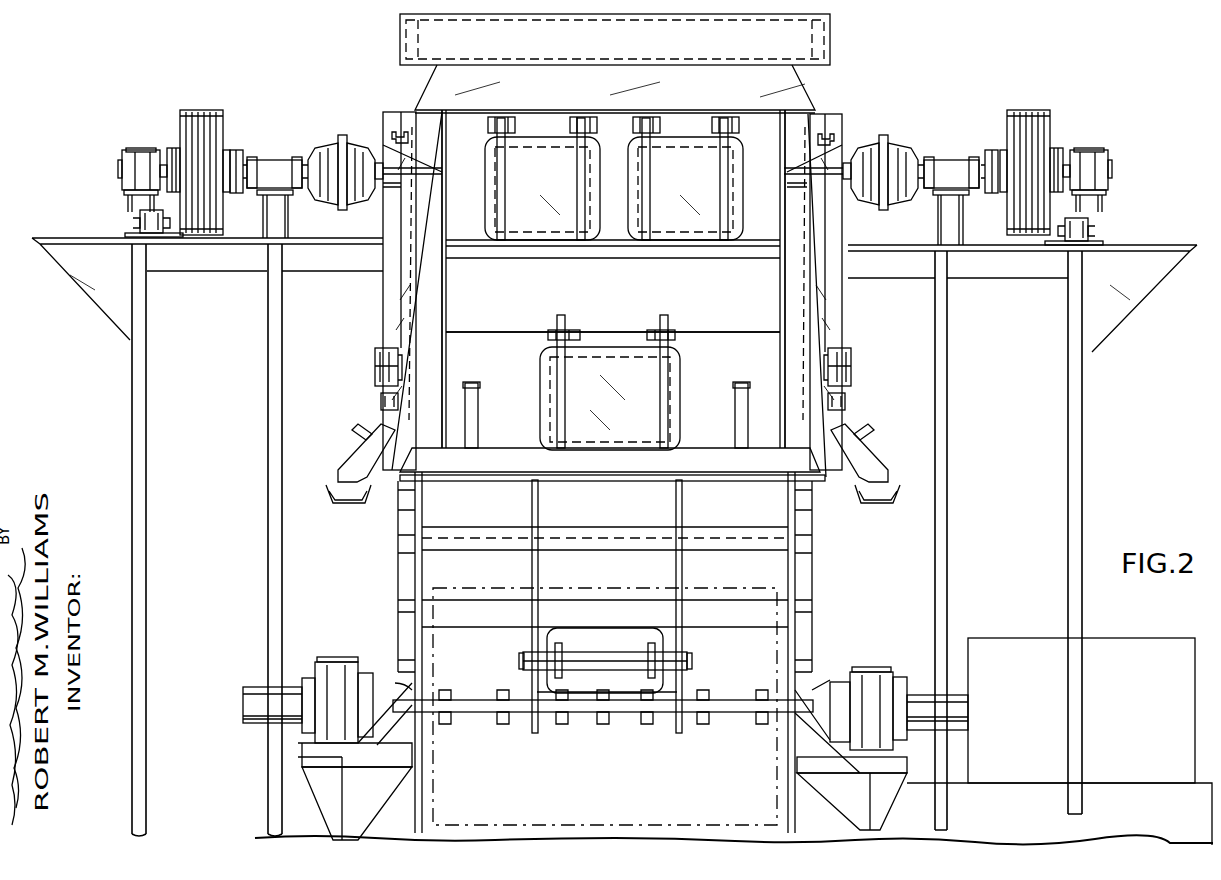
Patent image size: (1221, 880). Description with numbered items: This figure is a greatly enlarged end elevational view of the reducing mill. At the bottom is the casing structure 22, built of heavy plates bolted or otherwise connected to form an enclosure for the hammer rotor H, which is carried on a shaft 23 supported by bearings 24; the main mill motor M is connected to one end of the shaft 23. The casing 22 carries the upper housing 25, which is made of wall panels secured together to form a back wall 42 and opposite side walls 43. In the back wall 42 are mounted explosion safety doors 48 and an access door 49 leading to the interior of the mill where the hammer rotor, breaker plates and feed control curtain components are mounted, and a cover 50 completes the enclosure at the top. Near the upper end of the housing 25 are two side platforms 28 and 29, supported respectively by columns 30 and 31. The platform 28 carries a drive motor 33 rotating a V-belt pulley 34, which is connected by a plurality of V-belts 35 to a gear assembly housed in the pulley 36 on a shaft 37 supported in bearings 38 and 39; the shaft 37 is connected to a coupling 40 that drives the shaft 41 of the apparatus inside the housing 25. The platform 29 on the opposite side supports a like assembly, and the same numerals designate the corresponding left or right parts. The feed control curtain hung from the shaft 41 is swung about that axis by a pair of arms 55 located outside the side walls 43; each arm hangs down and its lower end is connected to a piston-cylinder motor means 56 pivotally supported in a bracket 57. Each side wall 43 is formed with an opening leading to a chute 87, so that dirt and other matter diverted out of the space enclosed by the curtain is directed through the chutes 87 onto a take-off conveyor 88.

The casing structure 22 is at (770, 582).
The shaft 23 is at (915, 700).
The bearings 24 is at (318, 668).
The upper housing 25 is at (656, 290).
The side platform 28 is at (58, 238).
The side platform 29 is at (1165, 246).
The columns 30 is at (267, 402).
The columns 31 is at (1068, 372).
The drive motor 33 is at (140, 217).
The V-belt pulley 34 is at (213, 236).
The V-belts 35 is at (213, 126).
The pulley 36 is at (182, 122).
The shaft 37 is at (241, 160).
The bearing 38 is at (140, 150).
The bearing 39 is at (278, 160).
The coupling 40 is at (338, 142).
The shaft 41 is at (381, 164).
The back wall 42 is at (556, 290).
The side walls 43 is at (446, 310).
The explosion safety doors 48 is at (552, 188).
The access door 49 is at (602, 400).
The cover 50 is at (752, 92).
The arms 55 is at (383, 296).
The piston-cylinder motor means 56 is at (383, 404).
The bracket 57 is at (378, 362).
The chute 87 is at (365, 459).
The take-off conveyor 88 is at (346, 504).
The hammer rotor H is at (427, 630).
The main mill motor M is at (1140, 645).